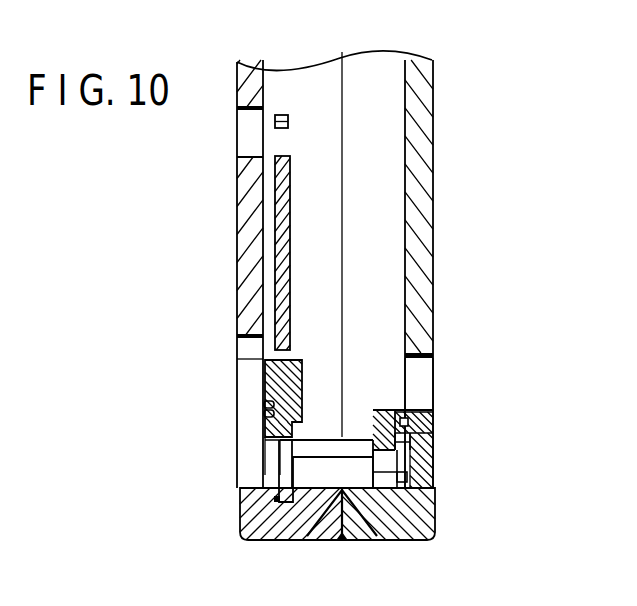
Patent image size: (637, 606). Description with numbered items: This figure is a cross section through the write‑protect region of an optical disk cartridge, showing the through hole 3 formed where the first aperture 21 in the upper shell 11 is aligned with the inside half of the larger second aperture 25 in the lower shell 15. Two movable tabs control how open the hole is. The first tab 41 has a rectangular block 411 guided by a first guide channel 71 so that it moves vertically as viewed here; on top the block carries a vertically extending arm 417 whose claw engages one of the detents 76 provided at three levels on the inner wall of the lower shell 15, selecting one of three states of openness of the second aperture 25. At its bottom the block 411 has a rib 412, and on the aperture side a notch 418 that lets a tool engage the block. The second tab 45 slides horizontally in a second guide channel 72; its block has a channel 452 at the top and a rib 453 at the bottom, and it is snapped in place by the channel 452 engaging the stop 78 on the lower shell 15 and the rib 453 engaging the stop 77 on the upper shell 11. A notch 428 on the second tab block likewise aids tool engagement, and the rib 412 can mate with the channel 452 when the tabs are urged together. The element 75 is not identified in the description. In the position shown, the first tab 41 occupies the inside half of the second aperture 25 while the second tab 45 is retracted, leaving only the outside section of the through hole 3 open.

The through hole 3 is at (350, 385).
The upper shell 11 is at (422, 144).
The lower shell 15 is at (250, 220).
The first aperture 21 is at (428, 384).
The second aperture 25 is at (257, 398).
The first tab 41 is at (267, 375).
The second tab 45 is at (432, 430).
The first guide channel 71 is at (287, 475).
The second guide channel 72 is at (323, 450).
The seal element 75 is at (428, 442).
The detent 76 is at (282, 114).
The stop 77 is at (243, 520).
The stop 78 is at (398, 405).
The block 411 is at (264, 404).
The rib 412 is at (270, 434).
The arm 417 is at (283, 182).
The notch 418 is at (264, 413).
The notch 428 is at (373, 490).
The channel 452 is at (430, 413).
The rib 453 is at (430, 497).